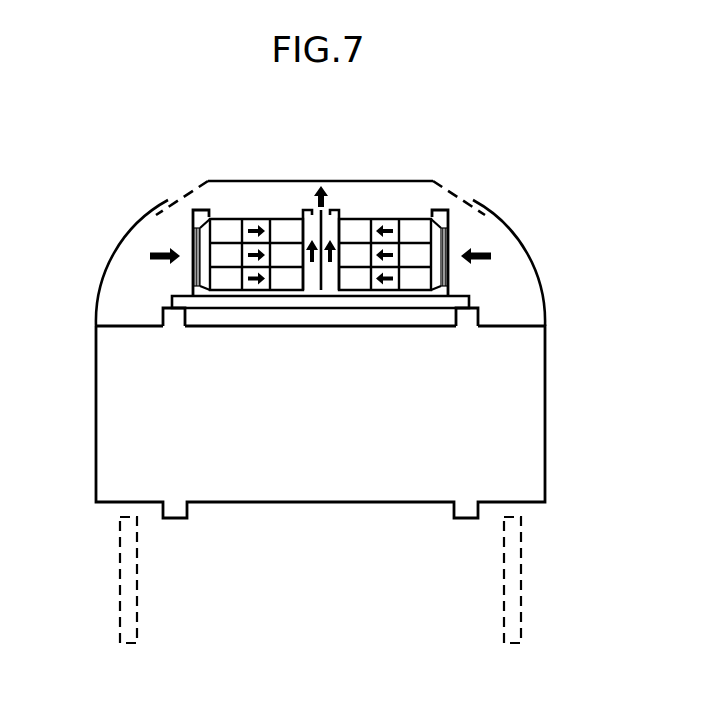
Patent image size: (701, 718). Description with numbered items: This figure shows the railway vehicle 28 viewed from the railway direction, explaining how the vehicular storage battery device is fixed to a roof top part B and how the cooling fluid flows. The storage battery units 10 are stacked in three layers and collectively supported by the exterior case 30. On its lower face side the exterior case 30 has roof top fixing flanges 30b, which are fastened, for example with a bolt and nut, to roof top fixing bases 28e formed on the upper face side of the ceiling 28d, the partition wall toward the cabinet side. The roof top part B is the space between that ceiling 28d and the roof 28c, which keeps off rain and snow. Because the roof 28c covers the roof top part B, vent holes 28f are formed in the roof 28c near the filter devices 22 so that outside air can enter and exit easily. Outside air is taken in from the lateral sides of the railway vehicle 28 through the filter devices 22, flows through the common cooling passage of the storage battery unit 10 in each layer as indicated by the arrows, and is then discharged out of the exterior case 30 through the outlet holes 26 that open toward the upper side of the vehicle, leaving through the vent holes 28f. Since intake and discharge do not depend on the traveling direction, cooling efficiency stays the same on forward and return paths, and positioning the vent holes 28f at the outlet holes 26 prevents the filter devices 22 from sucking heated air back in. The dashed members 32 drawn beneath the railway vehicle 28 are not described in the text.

The storage battery unit 10 is at (293, 253).
The filter device 22 is at (190, 238).
The outlet hole 26 is at (302, 208).
The railway vehicle 28 is at (528, 378).
The roof 28c is at (420, 181).
The ceiling 28d is at (346, 310).
The roof top fixing base 28e is at (170, 320).
The vent hole 28f is at (163, 205).
The exterior case 30 is at (190, 206).
The roof top fixing flange 30b is at (188, 304).
The mounting leg 32 is at (120, 545).
The roof top part B is at (507, 260).